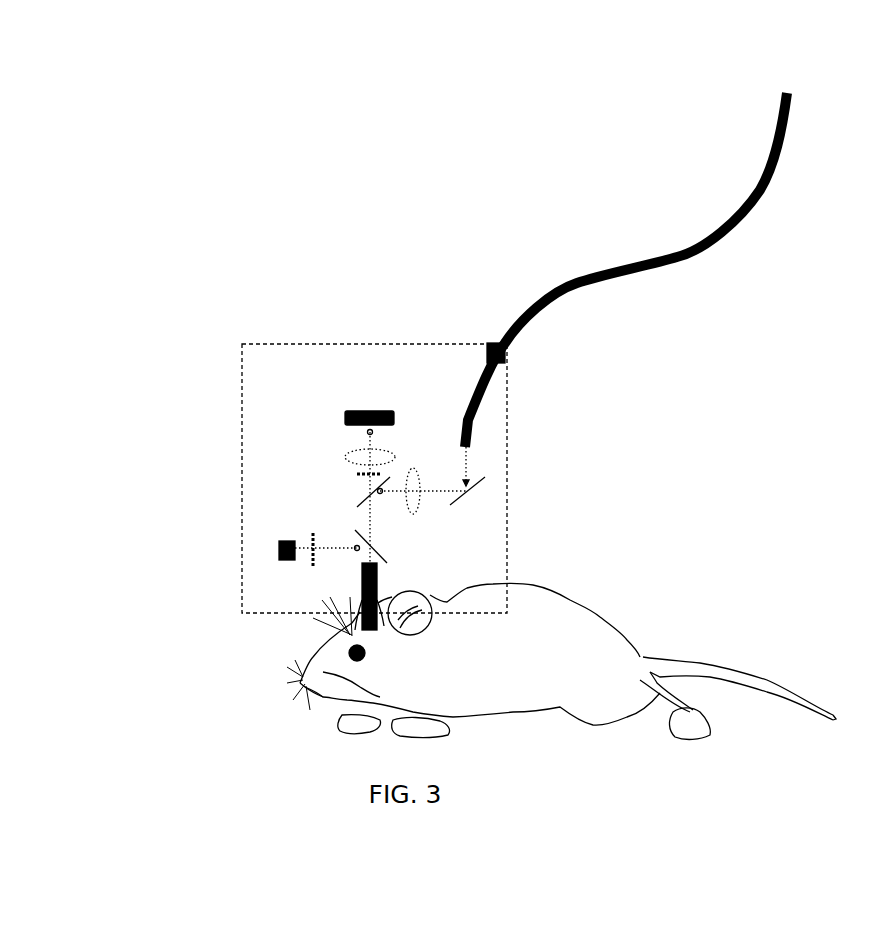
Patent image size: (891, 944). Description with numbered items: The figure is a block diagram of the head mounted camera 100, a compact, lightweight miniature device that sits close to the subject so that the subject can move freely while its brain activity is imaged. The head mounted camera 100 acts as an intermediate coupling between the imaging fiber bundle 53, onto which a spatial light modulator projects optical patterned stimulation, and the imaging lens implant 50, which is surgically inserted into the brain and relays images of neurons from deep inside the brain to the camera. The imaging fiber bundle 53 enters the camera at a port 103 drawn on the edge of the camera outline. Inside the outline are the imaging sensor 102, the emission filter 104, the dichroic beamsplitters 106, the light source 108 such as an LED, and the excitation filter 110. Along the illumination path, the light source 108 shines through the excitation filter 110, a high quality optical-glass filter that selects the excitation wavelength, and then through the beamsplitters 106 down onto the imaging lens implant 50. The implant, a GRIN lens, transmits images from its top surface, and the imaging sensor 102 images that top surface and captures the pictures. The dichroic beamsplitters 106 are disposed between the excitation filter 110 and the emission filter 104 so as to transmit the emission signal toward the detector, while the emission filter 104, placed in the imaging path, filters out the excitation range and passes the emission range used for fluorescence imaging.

The head mounted camera 100 is at (407, 365).
The imaging sensor 102 is at (366, 406).
The emission filter 104 is at (357, 474).
The dichroic beamsplitters 106 is at (357, 492).
The light source 108 is at (279, 549).
The excitation filter 110 is at (310, 563).
The imaging fiber bundle 53 is at (578, 283).
The port 103 is at (503, 353).
The imaging lens implant 50 is at (380, 592).